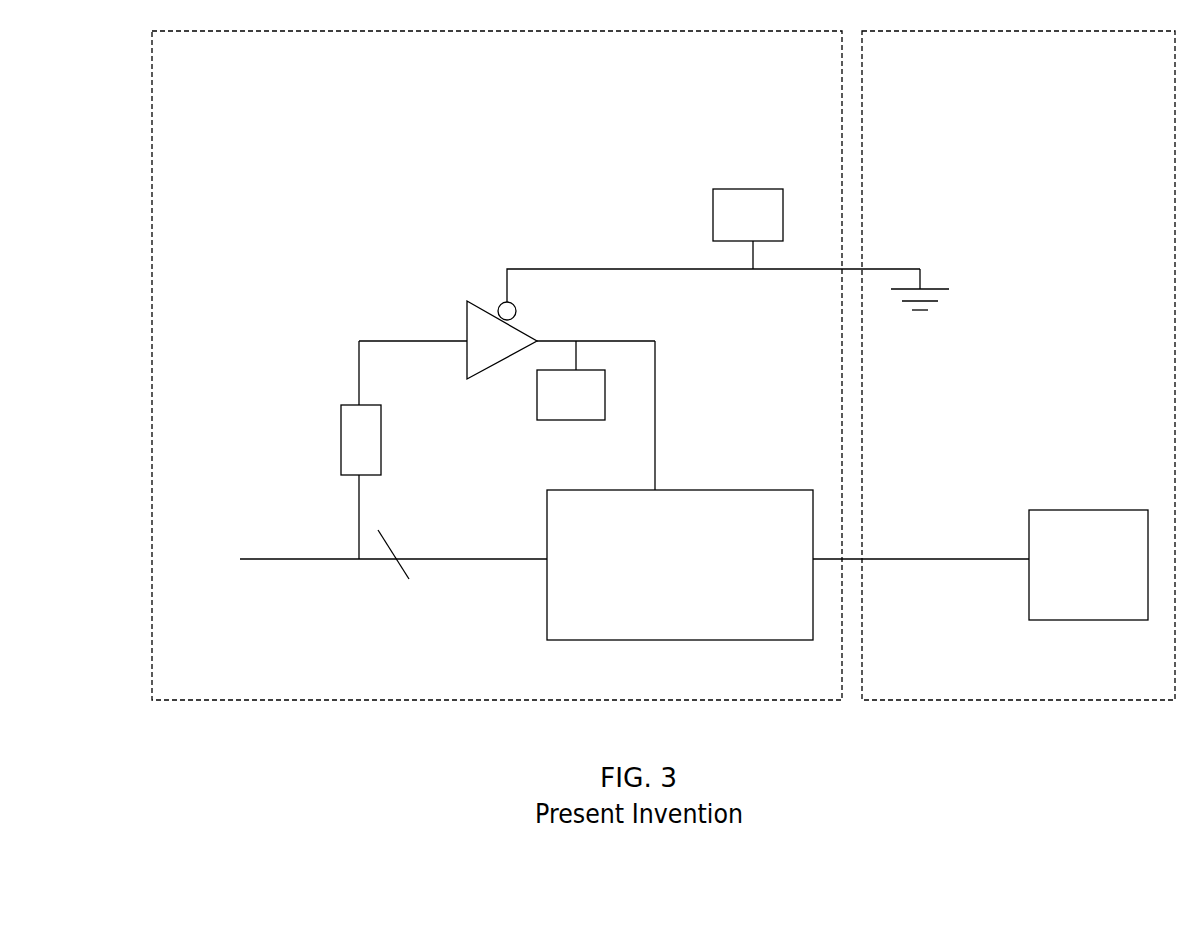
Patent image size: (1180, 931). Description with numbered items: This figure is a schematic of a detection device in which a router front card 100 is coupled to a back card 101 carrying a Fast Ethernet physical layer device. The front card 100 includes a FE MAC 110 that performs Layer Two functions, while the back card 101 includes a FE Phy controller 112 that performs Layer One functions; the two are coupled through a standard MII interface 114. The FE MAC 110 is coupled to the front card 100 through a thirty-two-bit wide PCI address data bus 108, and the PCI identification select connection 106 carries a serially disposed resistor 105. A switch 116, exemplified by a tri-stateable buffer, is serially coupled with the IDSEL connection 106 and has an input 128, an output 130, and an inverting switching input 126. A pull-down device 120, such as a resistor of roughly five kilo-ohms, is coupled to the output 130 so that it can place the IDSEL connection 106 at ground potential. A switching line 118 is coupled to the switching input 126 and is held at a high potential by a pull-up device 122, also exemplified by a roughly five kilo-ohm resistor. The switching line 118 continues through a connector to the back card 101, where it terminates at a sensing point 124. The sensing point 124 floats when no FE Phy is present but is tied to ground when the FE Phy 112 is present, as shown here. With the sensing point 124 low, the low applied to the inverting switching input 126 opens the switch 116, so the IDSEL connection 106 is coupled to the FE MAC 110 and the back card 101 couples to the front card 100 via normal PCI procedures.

The front card 100 is at (213, 68).
The back card 101 is at (903, 68).
The resistor 105 is at (330, 390).
The PCI identification select connection 106 is at (660, 342).
The PCI address data bus 108 is at (270, 548).
The FE MAC 110 is at (590, 518).
The FE Phy controller 112 is at (1040, 500).
The MII interface 114 is at (990, 550).
The switch 116 is at (458, 322).
The switching line 118 is at (537, 260).
The pull-down device 120 is at (523, 419).
The pull-up device 122 is at (705, 211).
The sensing point 124 is at (930, 272).
The switching input 126 is at (497, 298).
The input 128 is at (460, 347).
The output 130 is at (533, 332).